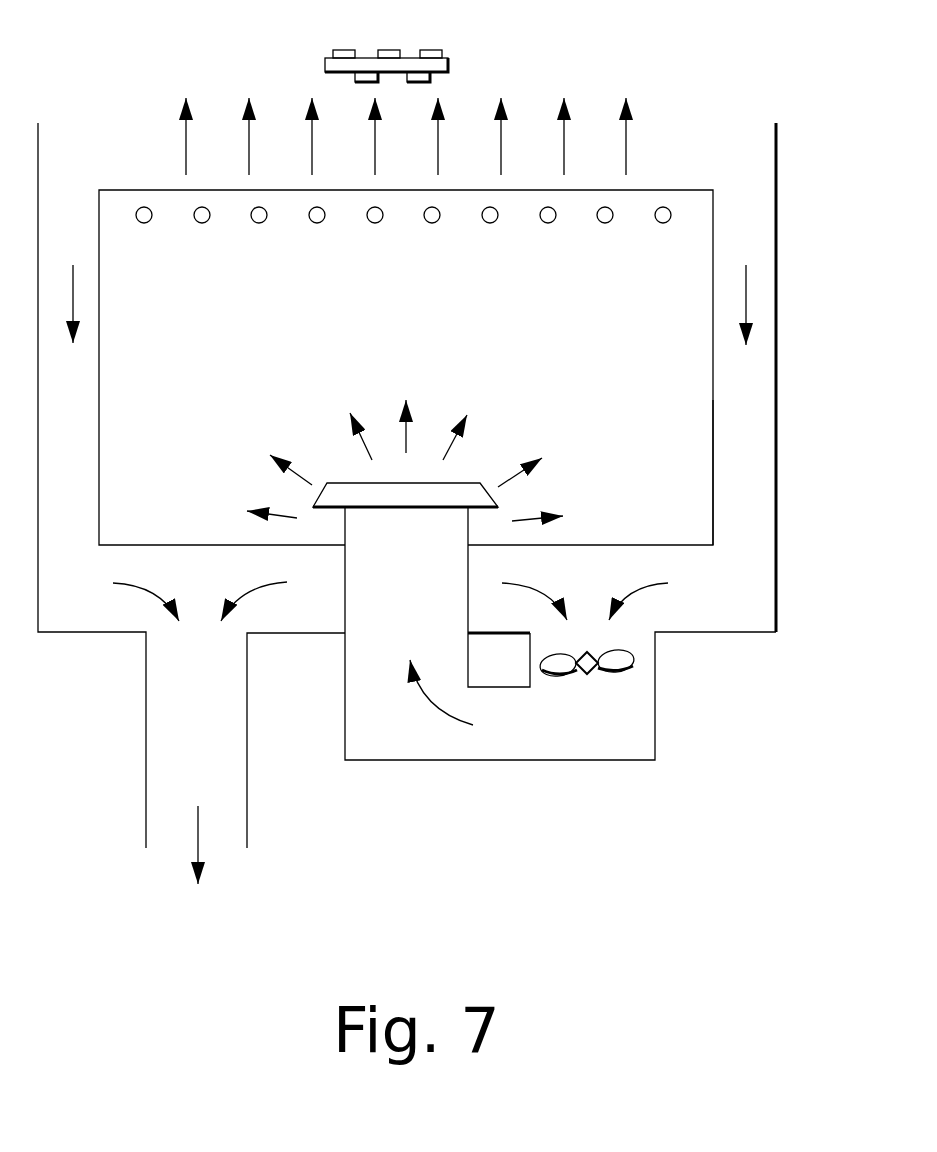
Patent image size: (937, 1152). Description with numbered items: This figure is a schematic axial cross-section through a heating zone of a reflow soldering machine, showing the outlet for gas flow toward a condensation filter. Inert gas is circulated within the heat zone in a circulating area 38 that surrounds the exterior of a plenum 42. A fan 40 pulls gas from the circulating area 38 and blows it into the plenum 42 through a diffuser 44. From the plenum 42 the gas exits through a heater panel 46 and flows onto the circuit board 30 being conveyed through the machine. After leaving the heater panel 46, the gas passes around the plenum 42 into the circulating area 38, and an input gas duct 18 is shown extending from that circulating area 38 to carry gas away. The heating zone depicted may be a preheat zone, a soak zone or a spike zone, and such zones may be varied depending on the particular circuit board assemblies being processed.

The input gas duct 18 is at (146, 762).
The circuit board 30 is at (433, 50).
The circulating area 38 is at (760, 425).
The fan 40 is at (635, 668).
The plenum 42 is at (713, 495).
The diffuser 44 is at (472, 478).
The heater panel 46 is at (670, 190).